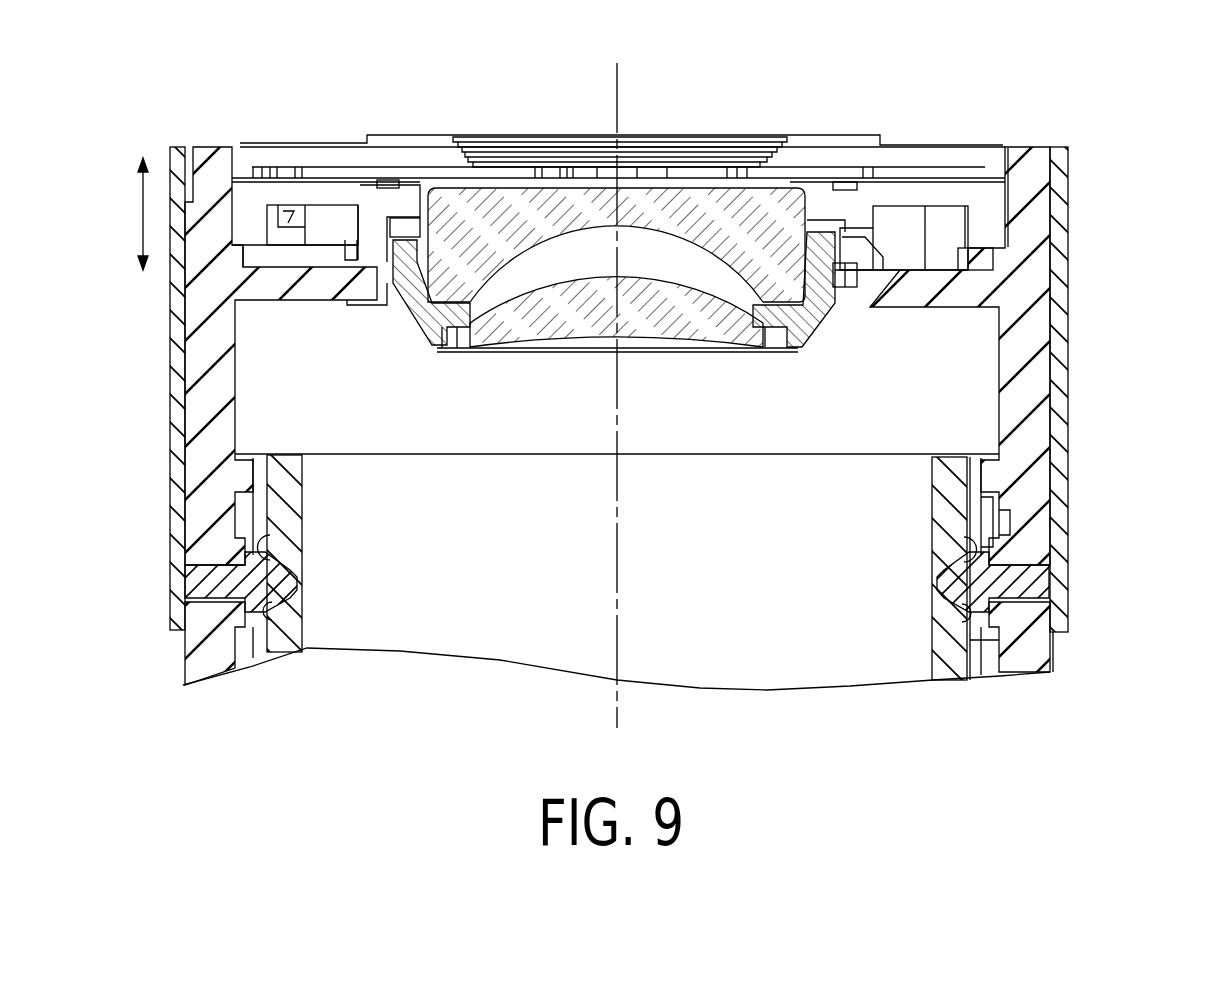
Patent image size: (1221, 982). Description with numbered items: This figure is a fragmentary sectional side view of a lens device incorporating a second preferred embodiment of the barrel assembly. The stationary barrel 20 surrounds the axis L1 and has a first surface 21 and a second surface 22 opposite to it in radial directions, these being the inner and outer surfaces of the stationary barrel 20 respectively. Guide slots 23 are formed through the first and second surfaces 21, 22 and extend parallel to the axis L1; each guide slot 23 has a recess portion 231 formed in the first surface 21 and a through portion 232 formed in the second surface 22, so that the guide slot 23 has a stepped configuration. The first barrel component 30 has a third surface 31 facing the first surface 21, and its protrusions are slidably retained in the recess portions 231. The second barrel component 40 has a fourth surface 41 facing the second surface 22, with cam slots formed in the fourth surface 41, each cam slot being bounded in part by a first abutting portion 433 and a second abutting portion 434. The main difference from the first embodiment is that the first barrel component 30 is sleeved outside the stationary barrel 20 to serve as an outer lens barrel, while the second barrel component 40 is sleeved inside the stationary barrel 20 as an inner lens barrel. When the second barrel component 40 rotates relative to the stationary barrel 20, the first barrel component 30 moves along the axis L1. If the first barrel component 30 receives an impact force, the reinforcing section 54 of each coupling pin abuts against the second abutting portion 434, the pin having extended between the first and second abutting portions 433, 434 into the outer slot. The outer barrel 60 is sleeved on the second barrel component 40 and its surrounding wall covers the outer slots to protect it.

The axis L1 is at (617, 377).
The stationary barrel 20 is at (987, 678).
The first surface 21 is at (1000, 464).
The second surface 22 is at (933, 462).
The guide slot 23 is at (1000, 505).
The recess portion 231 is at (1000, 521).
The through portion 232 is at (977, 520).
The first barrel component 30 is at (1014, 147).
The third surface 31 is at (1040, 367).
The second barrel component 40 is at (941, 680).
The fourth surface 41 is at (990, 640).
The first abutting portion 433 is at (302, 532).
The second abutting portion 434 is at (302, 622).
The reinforcing section 54 is at (302, 573).
The outer barrel 60 is at (1069, 302).